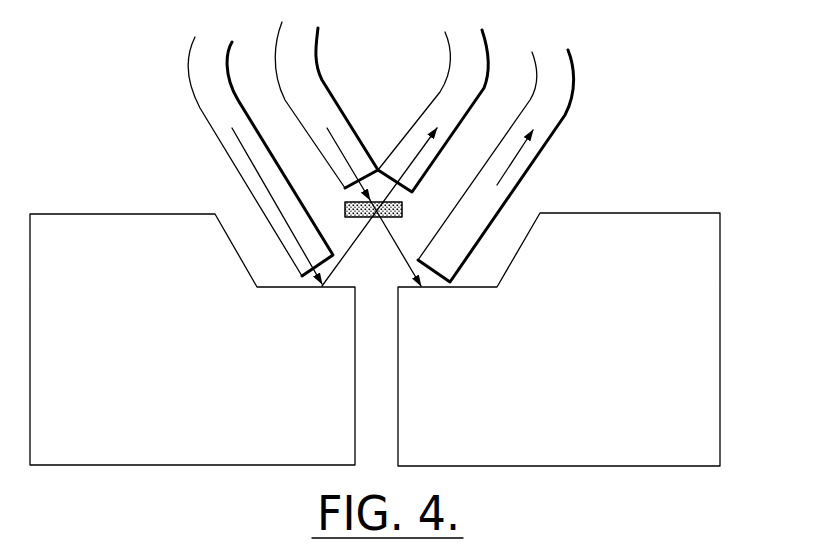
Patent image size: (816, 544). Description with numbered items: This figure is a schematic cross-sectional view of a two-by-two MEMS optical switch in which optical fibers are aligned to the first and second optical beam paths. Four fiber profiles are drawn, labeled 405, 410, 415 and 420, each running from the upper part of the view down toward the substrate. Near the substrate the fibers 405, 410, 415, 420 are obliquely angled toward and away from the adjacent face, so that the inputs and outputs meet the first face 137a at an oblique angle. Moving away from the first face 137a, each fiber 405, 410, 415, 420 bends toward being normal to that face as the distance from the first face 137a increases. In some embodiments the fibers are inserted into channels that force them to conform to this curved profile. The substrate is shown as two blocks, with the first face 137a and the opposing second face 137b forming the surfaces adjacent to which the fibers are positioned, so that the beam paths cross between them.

The optical fiber 405 is at (227, 160).
The optical fiber 410 is at (330, 106).
The optical fiber 415 is at (441, 150).
The fourth channel / waveguide 420 is at (530, 160).
The first face 137a is at (559, 313).
The second face 137b is at (192, 360).